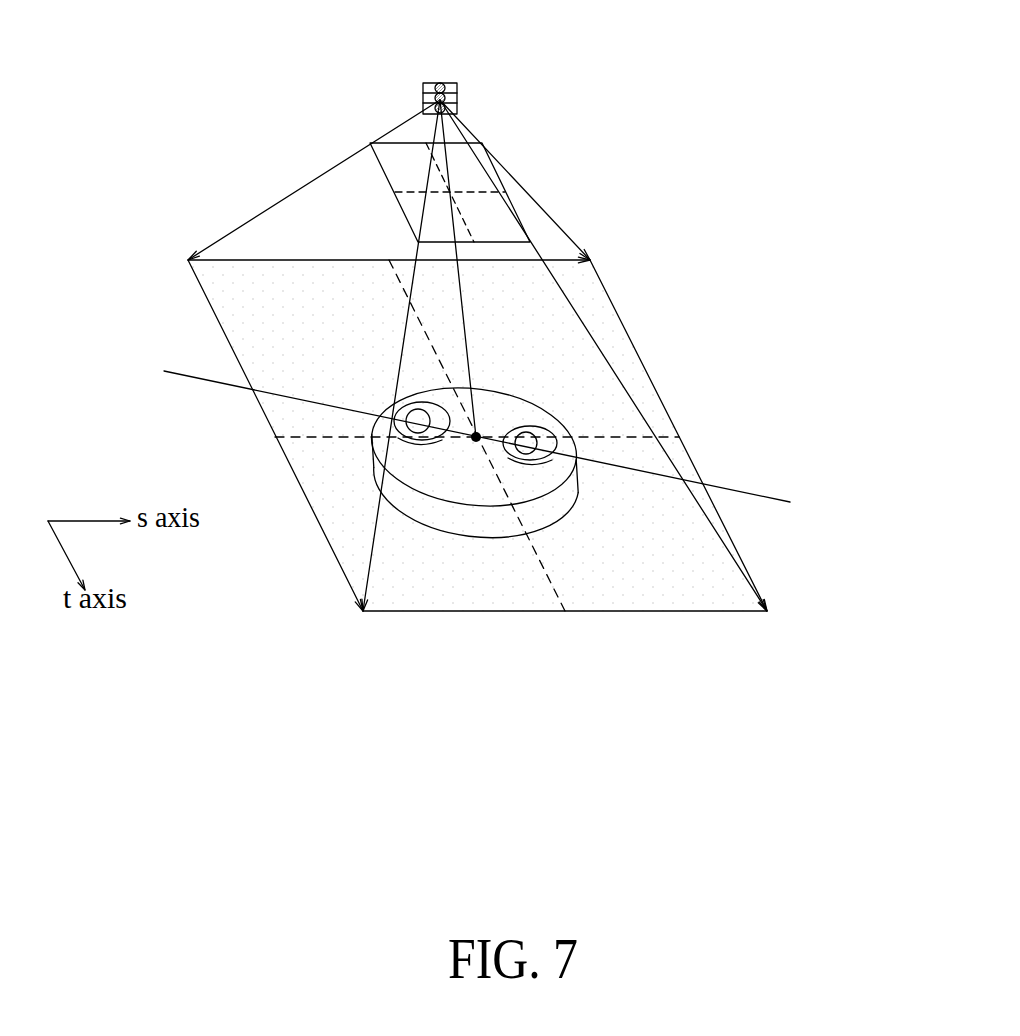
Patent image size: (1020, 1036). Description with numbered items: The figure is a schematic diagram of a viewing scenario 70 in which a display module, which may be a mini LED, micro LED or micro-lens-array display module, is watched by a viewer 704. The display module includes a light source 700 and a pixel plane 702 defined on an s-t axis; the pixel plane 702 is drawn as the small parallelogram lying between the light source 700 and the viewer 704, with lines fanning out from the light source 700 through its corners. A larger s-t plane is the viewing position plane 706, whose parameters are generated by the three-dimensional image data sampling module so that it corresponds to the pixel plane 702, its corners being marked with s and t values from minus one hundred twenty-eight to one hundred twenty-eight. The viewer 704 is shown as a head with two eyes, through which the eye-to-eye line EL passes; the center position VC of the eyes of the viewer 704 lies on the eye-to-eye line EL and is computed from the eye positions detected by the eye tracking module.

The viewing scenario 70 is at (750, 90).
The light source 700 is at (457, 98).
The pixel plane 702 is at (400, 208).
The viewer 704 is at (560, 519).
The viewing position plane 706 is at (610, 613).
The center position VC is at (480, 433).
The eye-to-eye line EL is at (499, 444).